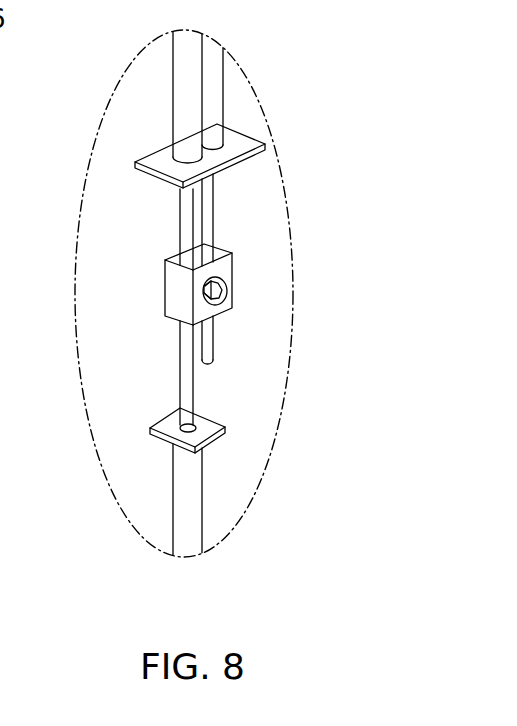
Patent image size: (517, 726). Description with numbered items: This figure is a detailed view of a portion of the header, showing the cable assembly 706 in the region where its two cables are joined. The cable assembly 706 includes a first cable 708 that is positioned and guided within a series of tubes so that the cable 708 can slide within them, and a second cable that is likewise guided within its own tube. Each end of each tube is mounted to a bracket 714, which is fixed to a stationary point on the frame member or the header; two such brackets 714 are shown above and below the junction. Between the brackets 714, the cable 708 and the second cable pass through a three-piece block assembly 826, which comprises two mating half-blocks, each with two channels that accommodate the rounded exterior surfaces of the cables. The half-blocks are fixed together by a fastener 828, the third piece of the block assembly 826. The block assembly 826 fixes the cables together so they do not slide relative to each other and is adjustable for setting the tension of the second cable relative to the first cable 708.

The cable assembly 706 is at (166, 127).
The bracket 714 is at (258, 150).
The first cable 708 is at (188, 225).
The three-piece block assembly 826 is at (174, 288).
The fastener 828 is at (226, 293).